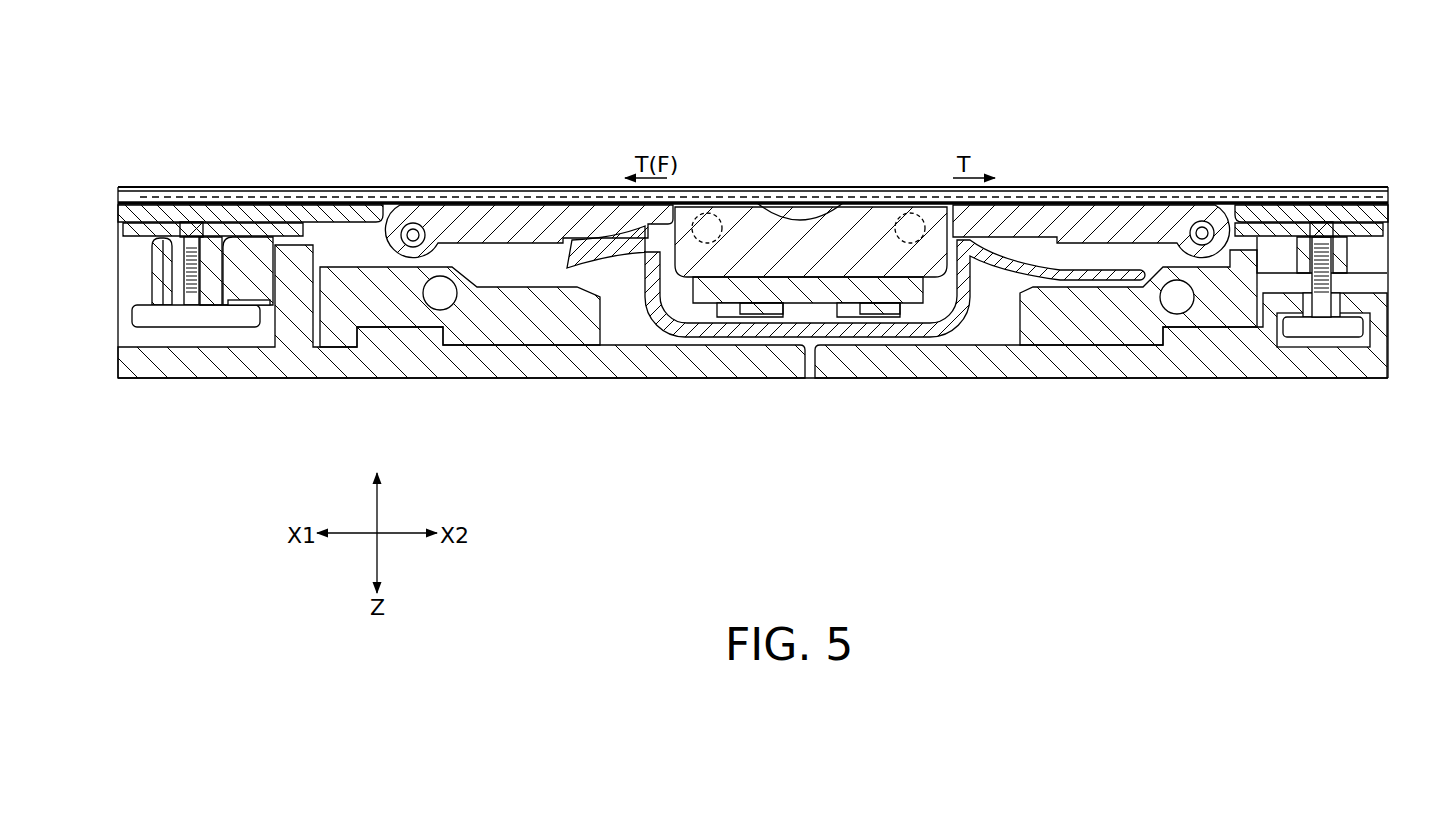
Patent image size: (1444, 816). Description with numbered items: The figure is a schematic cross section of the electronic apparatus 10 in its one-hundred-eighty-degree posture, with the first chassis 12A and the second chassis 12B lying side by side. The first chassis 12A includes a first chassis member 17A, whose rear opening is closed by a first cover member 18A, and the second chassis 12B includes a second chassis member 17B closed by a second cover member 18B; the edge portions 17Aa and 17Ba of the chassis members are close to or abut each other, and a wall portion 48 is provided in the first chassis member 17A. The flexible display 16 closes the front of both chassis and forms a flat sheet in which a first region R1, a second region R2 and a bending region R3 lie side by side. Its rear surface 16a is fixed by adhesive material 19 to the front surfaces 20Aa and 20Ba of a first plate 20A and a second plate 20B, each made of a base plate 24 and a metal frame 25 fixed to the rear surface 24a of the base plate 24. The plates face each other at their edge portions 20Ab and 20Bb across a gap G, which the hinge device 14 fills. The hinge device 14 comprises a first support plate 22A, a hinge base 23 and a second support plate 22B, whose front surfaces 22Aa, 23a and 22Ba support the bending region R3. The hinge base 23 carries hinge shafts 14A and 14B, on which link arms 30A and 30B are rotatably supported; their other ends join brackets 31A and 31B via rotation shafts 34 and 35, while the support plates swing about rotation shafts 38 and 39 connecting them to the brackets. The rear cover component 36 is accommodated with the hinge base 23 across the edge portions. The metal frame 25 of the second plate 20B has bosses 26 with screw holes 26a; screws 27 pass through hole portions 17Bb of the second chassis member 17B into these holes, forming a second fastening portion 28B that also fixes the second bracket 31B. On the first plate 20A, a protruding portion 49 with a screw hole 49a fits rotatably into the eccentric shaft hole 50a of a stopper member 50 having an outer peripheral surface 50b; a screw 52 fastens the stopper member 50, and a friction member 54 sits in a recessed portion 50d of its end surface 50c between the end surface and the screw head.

The electronic apparatus 10 is at (243, 68).
The first chassis 12A is at (533, 412).
The second chassis 12B is at (1087, 410).
The hinge device 14 is at (673, 335).
The first hinge shaft 14A is at (710, 213).
The second hinge shaft 14B is at (908, 213).
The display 16 is at (433, 186).
The rear surface 16a is at (583, 203).
The first chassis member 17A is at (590, 374).
The edge portion 17Aa is at (817, 358).
The second chassis member 17B is at (1017, 372).
The edge portion 17Ba is at (797, 362).
The hole portion 17Bb is at (1340, 348).
The first cover member 18A is at (327, 367).
The second cover member 18B is at (1315, 362).
The adhesive material 19 is at (157, 187).
The first plate 20A is at (305, 132).
The front surface 20Aa is at (327, 187).
The edge portion 20Ab is at (358, 187).
The second plate 20B is at (1387, 133).
The front surface 20Ba is at (1303, 187).
The edge portion 20Bb is at (1253, 187).
The first support plate 22A is at (523, 220).
The front surface 22Aa is at (487, 207).
The second support plate 22B is at (1090, 213).
The front surface 22Ba is at (1058, 207).
The hinge base 23 is at (845, 207).
The front surface 23a is at (757, 203).
The base plate 24 is at (277, 187).
The rear surface 24a is at (117, 242).
The metal frame 25 is at (248, 187).
The boss 26 is at (1347, 254).
The screw hole 26a is at (1320, 223).
The screw 27 is at (1350, 335).
The second fastening portion 28B is at (1295, 347).
The first link arm 30A is at (600, 266).
The second link arm 30B is at (1025, 270).
The first bracket 31A is at (487, 328).
The second bracket 31B is at (1132, 328).
The rotation shaft 34 is at (437, 300).
The rotation shaft 35 is at (1180, 300).
The rear cover component 36 is at (740, 337).
The rotation shaft 38 is at (413, 233).
The rotation shaft 39 is at (1202, 233).
The wall portion 48 is at (287, 305).
The protruding portion 49 is at (210, 187).
The screw hole 49a is at (187, 187).
The stopper member 50 is at (147, 265).
The shaft hole 50a is at (168, 307).
The outer peripheral surface 50b is at (307, 278).
The end surface 50c is at (132, 317).
The recessed portion 50d is at (243, 305).
The screw 52 is at (163, 320).
The friction member 54 is at (197, 470).
The first region R1 is at (147, 185).
The second region R2 is at (1383, 186).
The bending region R3 is at (938, 185).
The gap G is at (1236, 187).